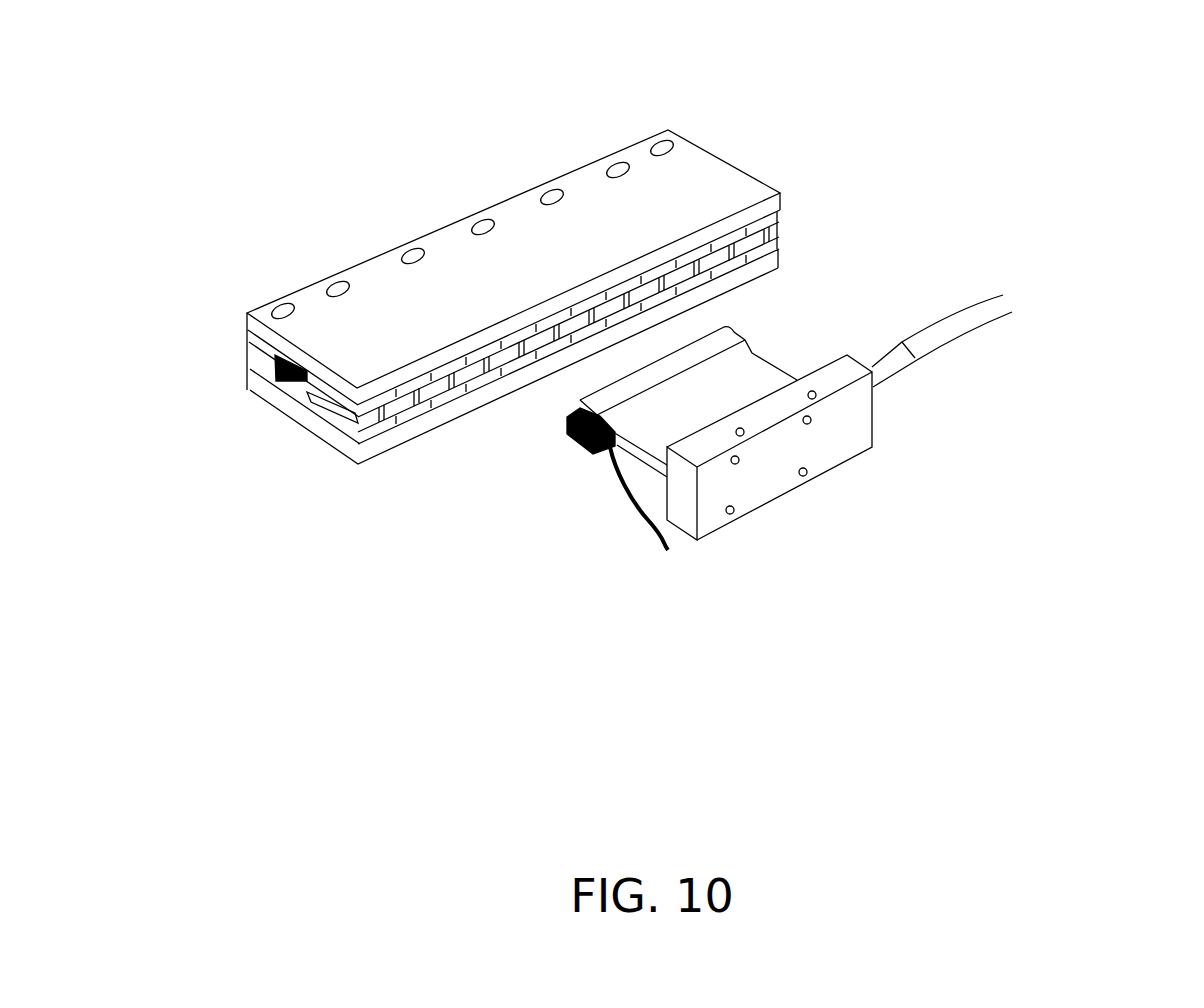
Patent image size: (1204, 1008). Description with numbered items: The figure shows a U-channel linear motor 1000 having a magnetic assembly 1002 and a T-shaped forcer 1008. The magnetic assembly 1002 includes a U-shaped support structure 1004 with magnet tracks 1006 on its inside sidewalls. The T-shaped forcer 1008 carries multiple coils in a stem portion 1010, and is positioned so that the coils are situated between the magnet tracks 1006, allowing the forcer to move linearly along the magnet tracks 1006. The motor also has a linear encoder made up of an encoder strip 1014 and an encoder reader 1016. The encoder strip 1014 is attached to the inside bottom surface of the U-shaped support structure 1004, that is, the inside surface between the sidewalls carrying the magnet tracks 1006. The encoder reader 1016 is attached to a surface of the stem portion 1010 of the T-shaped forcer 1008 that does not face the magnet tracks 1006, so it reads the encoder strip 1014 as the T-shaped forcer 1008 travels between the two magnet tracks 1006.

The U-channel linear motor 1000 is at (1112, 136).
The magnetic assembly 1002 is at (716, 113).
The U-shaped support structure 1004 is at (405, 292).
The magnet tracks 1006 is at (417, 418).
The T-shaped forcer 1008 is at (853, 453).
The stem portion 1010 is at (750, 380).
The encoder strip 1014 is at (285, 383).
The encoder reader 1016 is at (566, 435).